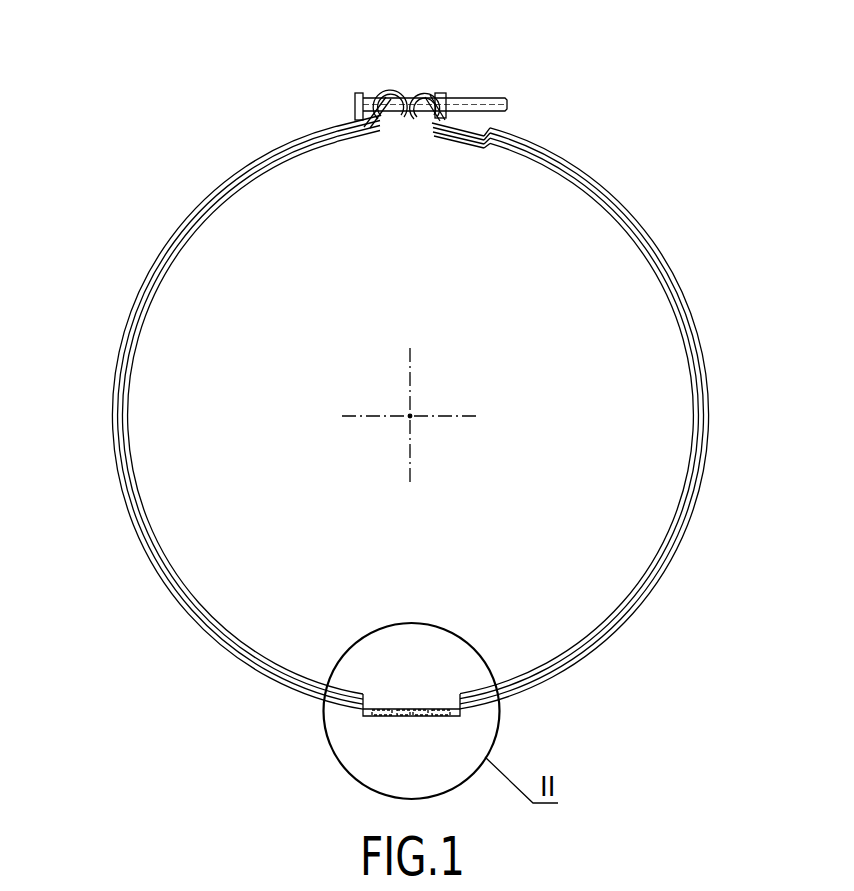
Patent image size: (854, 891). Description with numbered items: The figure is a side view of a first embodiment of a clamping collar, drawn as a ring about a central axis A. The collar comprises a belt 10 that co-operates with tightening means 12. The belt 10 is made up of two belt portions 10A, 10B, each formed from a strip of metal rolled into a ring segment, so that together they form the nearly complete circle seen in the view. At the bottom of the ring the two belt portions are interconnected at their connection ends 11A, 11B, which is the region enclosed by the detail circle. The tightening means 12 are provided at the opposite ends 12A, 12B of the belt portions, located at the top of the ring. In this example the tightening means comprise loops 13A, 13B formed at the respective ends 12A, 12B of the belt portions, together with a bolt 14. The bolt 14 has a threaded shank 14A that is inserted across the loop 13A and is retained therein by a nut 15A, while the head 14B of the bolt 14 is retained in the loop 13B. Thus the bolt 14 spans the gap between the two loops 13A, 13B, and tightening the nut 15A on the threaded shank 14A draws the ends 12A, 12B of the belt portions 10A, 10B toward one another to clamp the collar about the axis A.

The belt 10 is at (409, 418).
The belt portion 10A is at (708, 390).
The belt portion 10B is at (113, 387).
The connection end 11A is at (462, 717).
The connection end 11B is at (362, 717).
The tightening means 12 is at (412, 108).
The end of belt portion 12A is at (423, 133).
The end of belt portion 12B is at (393, 133).
The loop 13A is at (433, 88).
The loop 13B is at (387, 89).
The bolt 14 is at (432, 80).
The threaded shank 14A is at (507, 104).
The head 14B is at (355, 105).
The nut 15A is at (447, 92).
The axis of the collar A is at (410, 416).